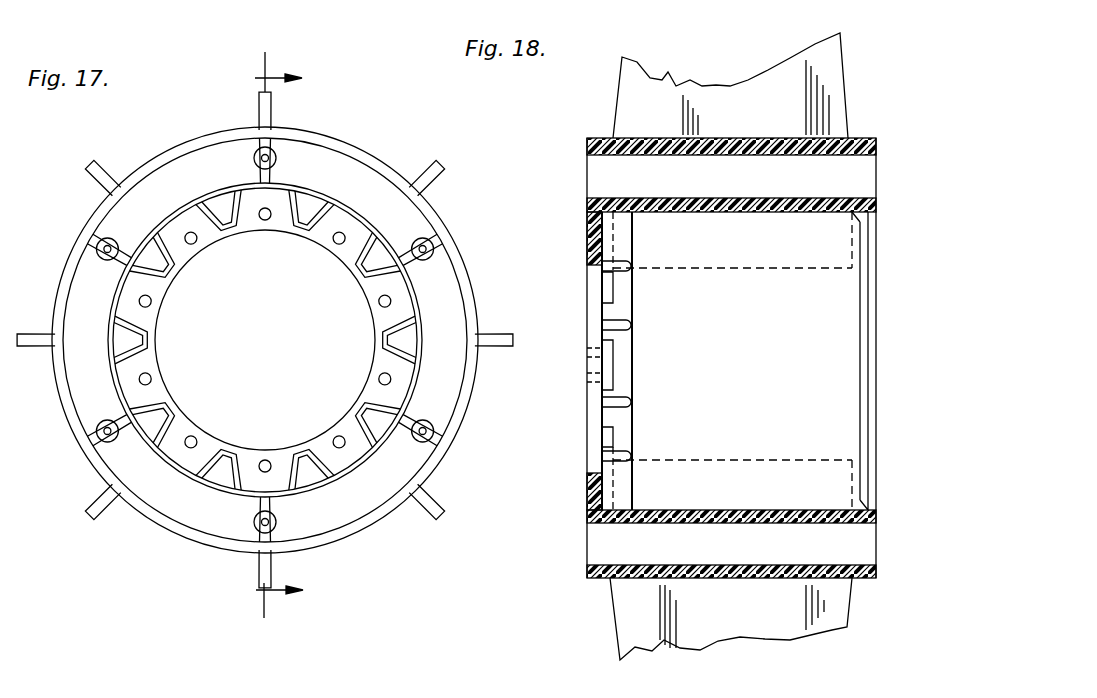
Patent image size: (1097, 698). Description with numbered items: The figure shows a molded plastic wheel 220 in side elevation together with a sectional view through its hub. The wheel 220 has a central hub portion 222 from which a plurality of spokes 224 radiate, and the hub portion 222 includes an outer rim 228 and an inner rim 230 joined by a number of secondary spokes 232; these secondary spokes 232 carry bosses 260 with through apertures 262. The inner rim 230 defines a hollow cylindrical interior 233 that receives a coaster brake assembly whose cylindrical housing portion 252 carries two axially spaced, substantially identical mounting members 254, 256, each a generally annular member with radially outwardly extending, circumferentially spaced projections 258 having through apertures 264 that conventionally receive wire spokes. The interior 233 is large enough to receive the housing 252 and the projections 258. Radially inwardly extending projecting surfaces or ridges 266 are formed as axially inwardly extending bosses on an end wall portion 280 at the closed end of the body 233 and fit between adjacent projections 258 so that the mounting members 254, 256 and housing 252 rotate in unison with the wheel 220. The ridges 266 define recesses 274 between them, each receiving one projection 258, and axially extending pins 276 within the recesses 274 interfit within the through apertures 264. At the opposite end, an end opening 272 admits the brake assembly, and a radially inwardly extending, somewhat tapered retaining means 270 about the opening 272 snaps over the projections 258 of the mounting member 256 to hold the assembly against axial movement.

In FIG. 17, the wheel 220 is at (176, 563).
In FIG. 17, the central hub portion 222 is at (348, 544).
In FIG. 17, the spokes 224 is at (430, 490).
In FIG. 18, the spokes 224 is at (622, 98).
In FIG. 17, the outer rim 228 is at (61, 430).
In FIG. 17, the inner rim 230 is at (112, 376).
In FIG. 17, the secondary spokes 232 is at (250, 170).
In FIG. 17, the hollow cylindrical interior 233 is at (288, 350).
In FIG. 18, the hollow cylindrical interior 233 is at (770, 364).
In FIG. 18, the cylindrical housing portion 252 is at (727, 490).
In FIG. 17, the mounting member 254 is at (246, 460).
In FIG. 18, the mounting member 254 is at (613, 251).
In FIG. 18, the mounting member 256 is at (848, 470).
In FIG. 17, the projections 258 is at (400, 302).
In FIG. 17, the bosses 260 is at (278, 160).
In FIG. 17, the through apertures 262 is at (265, 152).
In FIG. 17, the through aperture 264 is at (392, 382).
In FIG. 17, the projecting surfaces 266 is at (306, 212).
In FIG. 18, the projecting surfaces 266 is at (620, 235).
In FIG. 18, the retaining means 270 is at (866, 496).
In FIG. 18, the end opening 272 is at (866, 334).
In FIG. 17, the recesses 274 is at (393, 332).
In FIG. 17, the pins 276 is at (194, 245).
In FIG. 18, the pins 276 is at (636, 325).
In FIG. 18, the end wall portion 280 is at (588, 486).